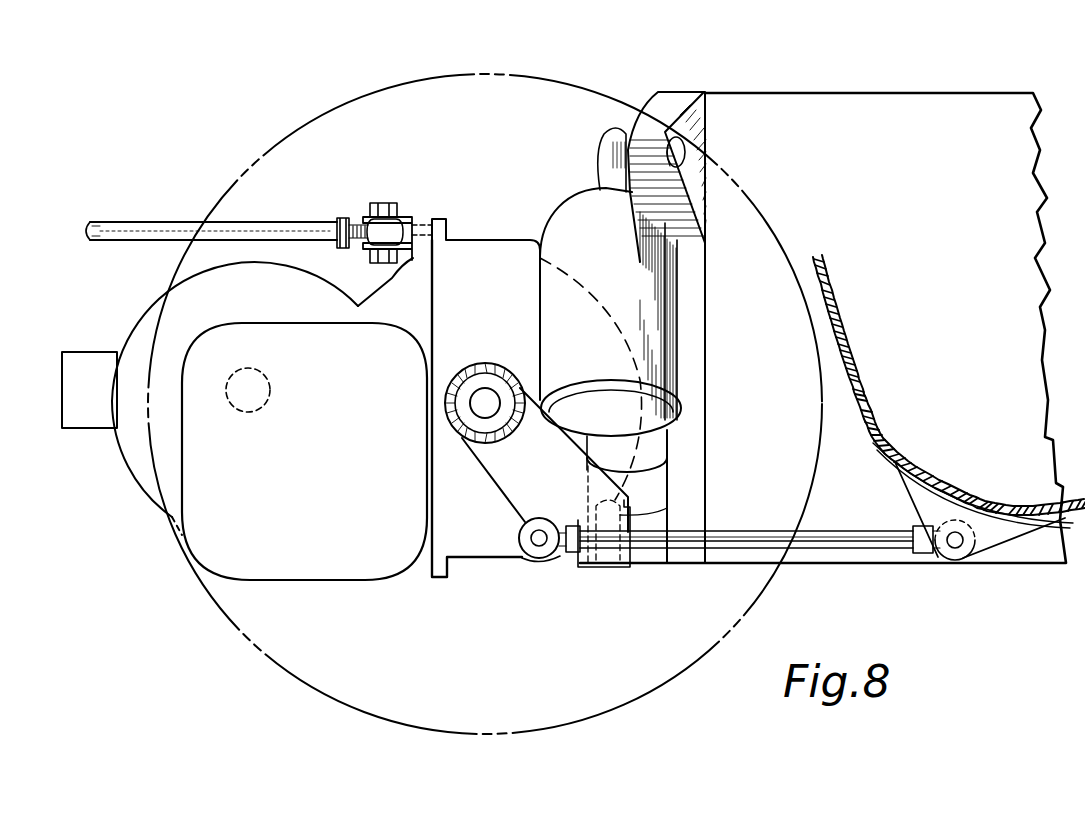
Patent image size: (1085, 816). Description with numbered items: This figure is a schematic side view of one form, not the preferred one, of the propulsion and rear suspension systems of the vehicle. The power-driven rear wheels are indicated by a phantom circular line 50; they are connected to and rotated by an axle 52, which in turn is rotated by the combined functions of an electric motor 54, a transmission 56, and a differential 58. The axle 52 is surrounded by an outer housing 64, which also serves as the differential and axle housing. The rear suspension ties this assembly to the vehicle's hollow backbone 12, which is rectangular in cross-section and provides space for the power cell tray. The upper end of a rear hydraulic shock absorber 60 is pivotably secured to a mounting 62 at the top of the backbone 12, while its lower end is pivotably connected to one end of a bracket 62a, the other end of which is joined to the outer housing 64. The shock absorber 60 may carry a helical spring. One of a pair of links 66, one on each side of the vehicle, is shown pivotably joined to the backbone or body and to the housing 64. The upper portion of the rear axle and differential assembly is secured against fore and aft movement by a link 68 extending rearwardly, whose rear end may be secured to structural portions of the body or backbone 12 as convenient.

The hollow backbone 12 is at (882, 103).
The phantom circular line 50 is at (320, 112).
The axle 52 is at (491, 386).
The electric motor 54 is at (160, 308).
The transmission 56 is at (322, 557).
The differential 58 is at (484, 244).
The rear hydraulic shock absorber 60 is at (561, 206).
The mounting 62 is at (656, 112).
The bracket 62a is at (522, 490).
The outer housing 64 is at (462, 374).
The link 66 is at (886, 552).
The link 68 is at (150, 232).